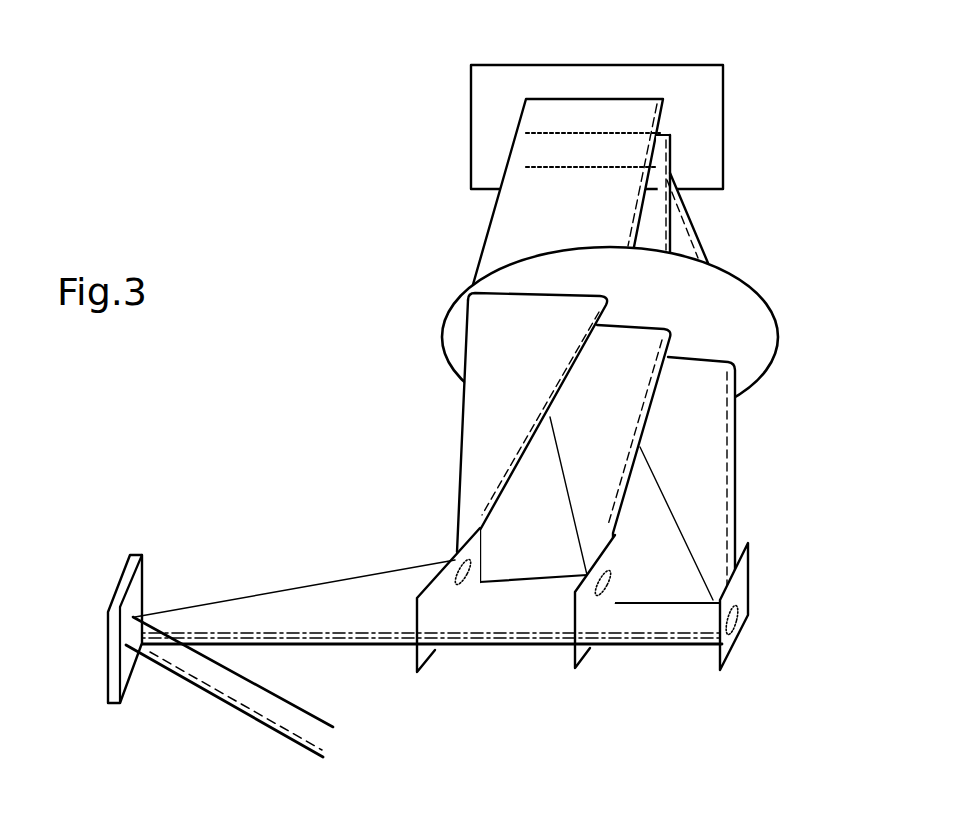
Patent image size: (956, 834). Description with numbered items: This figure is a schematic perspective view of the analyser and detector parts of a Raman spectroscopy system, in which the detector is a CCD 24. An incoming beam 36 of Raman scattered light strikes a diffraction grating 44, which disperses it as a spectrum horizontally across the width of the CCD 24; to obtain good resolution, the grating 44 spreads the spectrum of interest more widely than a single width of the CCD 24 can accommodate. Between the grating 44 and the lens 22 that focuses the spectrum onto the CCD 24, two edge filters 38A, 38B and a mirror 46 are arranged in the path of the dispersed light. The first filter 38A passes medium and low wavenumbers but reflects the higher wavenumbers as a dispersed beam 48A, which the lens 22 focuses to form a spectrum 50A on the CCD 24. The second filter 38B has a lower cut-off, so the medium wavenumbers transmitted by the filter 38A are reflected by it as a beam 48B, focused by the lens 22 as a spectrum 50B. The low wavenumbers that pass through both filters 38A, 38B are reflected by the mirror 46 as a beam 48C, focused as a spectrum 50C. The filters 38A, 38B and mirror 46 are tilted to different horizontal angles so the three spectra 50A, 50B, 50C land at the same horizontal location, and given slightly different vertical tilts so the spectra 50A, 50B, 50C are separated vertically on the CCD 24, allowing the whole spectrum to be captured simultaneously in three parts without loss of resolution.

The lens 22 is at (463, 297).
The CCD 24 is at (724, 126).
The incoming beam 36 is at (230, 688).
The first edge filter 38A is at (423, 656).
The second edge filter 38B is at (583, 657).
The diffraction grating 44 is at (143, 571).
The mirror 46 is at (751, 564).
The dispersed beam 48A is at (485, 435).
The beam 48B is at (592, 458).
The beam 48C is at (710, 456).
The spectrum 50A is at (594, 99).
The spectrum 50B is at (575, 133).
The spectrum 50C is at (572, 167).